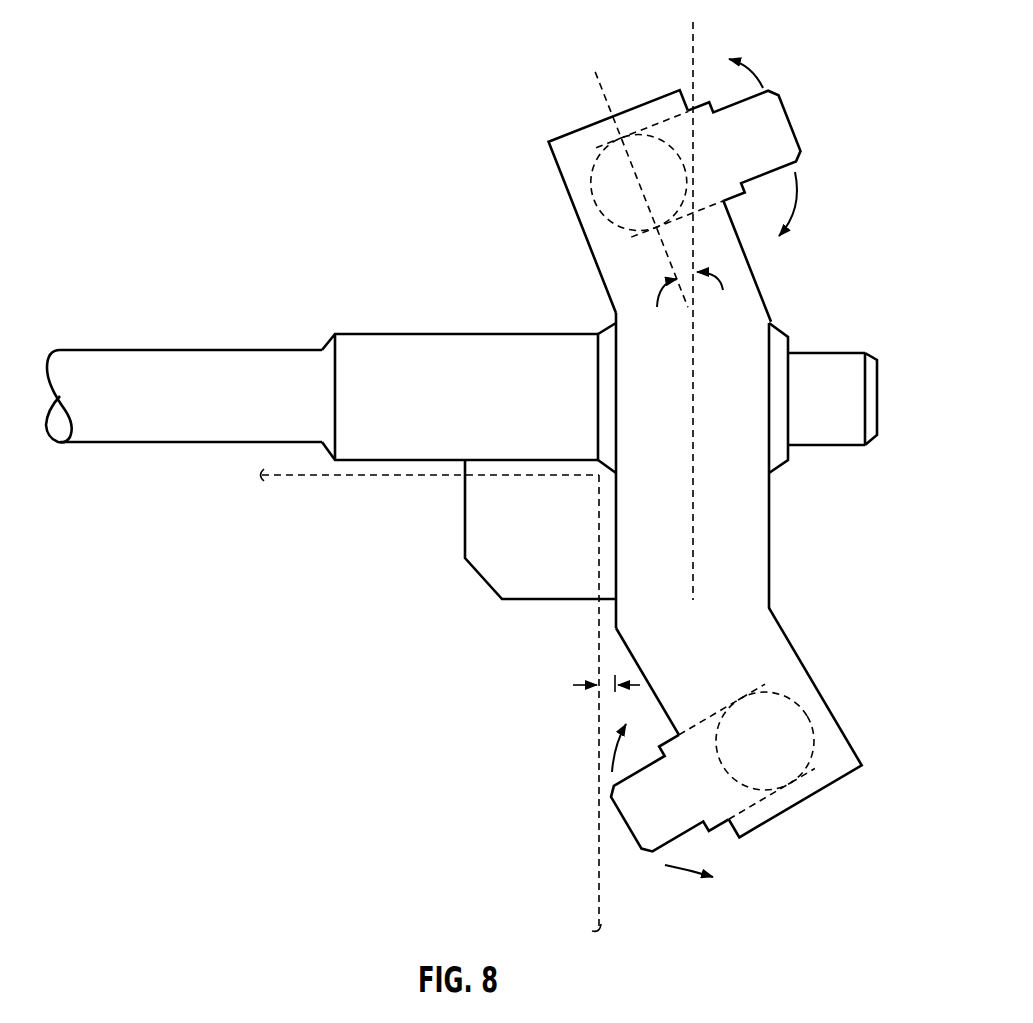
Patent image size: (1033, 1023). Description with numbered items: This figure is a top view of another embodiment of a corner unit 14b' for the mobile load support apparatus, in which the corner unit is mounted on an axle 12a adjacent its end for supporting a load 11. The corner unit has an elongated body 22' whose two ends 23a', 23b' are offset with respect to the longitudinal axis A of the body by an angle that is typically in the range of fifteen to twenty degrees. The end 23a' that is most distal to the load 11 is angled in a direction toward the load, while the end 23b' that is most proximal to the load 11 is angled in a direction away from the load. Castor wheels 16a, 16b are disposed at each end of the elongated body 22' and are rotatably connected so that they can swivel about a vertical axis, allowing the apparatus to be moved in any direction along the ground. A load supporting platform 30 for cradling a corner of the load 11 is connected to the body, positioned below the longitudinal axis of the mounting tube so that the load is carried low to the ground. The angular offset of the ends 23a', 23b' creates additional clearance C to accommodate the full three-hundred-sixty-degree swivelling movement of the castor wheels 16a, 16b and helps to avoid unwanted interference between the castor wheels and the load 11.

The load 11 is at (459, 707).
The axle 12a is at (225, 349).
The load supporting platform 30 is at (475, 524).
The longitudinal axis A is at (695, 39).
The elongated body 22' is at (746, 470).
The end of the elongated body 23a' is at (690, 209).
The end of the elongated body 23b' is at (758, 696).
The castor wheel 16a is at (790, 120).
The castor wheel 16b is at (660, 848).
The corner unit 14b' is at (827, 281).
The clearance C is at (607, 692).